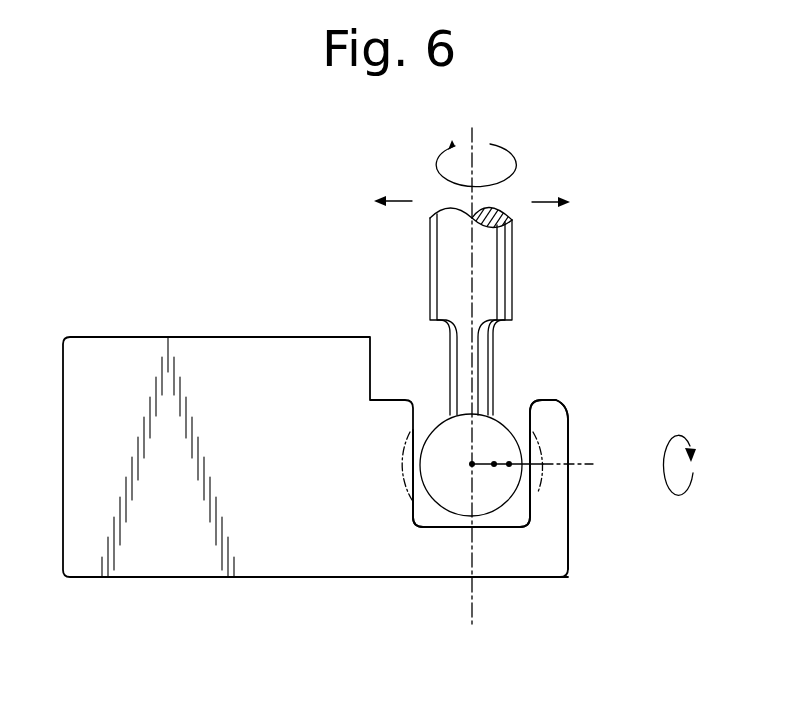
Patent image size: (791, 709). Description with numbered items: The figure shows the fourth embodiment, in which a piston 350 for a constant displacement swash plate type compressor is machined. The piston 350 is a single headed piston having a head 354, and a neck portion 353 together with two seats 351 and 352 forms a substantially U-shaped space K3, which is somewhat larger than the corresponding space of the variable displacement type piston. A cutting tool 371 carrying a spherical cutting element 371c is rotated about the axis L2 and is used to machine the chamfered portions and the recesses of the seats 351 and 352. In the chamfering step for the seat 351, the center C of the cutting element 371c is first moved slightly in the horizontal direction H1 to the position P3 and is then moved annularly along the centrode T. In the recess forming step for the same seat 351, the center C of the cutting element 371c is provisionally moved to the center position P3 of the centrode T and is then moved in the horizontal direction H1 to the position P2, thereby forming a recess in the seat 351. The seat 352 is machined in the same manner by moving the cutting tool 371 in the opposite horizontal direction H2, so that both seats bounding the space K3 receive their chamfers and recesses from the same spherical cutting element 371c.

The piston 350 is at (180, 586).
The seat 351 is at (542, 478).
The seat 352 is at (410, 440).
The neck portion 353 is at (450, 565).
The head 354 is at (240, 360).
The cutting tool 371 is at (495, 292).
The spherical cutting element 371c is at (498, 438).
The substantially U-shaped space K3 is at (427, 513).
The position P2 is at (509, 467).
The position P3 is at (494, 467).
The center of the cutting element C is at (514, 468).
The axis L2 is at (476, 366).
The horizontal direction H1 is at (569, 204).
The horizontal direction H2 is at (373, 204).
The centrode T is at (690, 465).